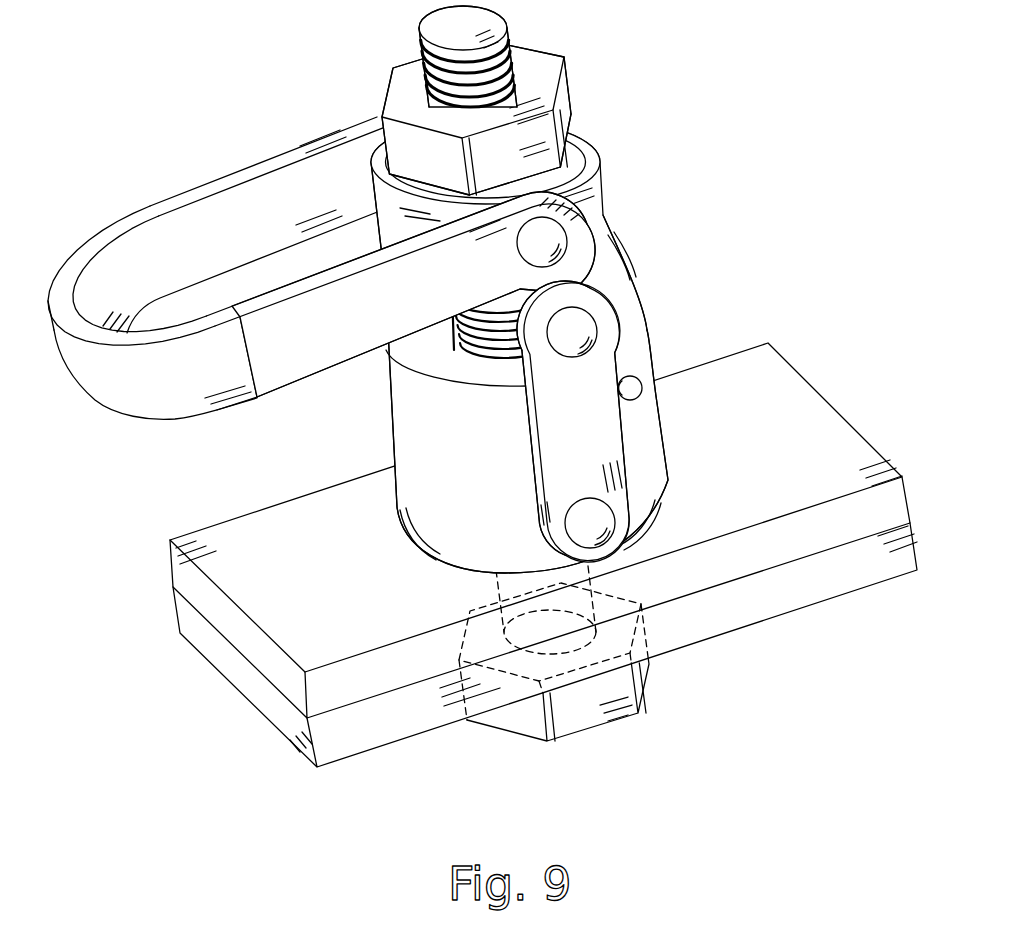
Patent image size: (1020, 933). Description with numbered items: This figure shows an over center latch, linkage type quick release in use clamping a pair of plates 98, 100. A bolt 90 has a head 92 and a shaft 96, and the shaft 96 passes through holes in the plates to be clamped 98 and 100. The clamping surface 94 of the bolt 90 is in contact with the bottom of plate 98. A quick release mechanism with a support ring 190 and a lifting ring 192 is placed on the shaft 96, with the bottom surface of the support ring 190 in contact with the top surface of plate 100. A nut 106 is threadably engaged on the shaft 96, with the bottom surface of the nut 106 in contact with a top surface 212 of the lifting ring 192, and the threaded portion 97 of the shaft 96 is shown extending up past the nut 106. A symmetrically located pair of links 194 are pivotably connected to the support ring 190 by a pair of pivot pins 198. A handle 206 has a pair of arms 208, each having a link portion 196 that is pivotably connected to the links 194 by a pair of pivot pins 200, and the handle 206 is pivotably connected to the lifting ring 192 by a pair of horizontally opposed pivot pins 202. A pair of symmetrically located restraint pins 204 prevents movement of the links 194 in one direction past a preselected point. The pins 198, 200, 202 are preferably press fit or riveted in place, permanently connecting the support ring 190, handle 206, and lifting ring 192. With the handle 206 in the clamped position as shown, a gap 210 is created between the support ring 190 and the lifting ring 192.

The bolt 90 is at (532, 748).
The head 92 is at (565, 728).
The clamping surface 94 is at (620, 638).
The shaft 96 is at (577, 572).
The threaded portion 97 is at (420, 48).
The plate 98 is at (397, 747).
The plate 100 is at (240, 508).
The nut 106 is at (570, 70).
The support ring 190 is at (377, 437).
The lifting ring 192 is at (600, 163).
The links 194 is at (555, 438).
The link portion 196 is at (572, 277).
The pivot pins 198 is at (580, 523).
The pivot pins 200 is at (590, 325).
The pivot pins 202 is at (556, 232).
The restraint pins 204 is at (645, 372).
The handle 206 is at (153, 422).
The arms 208 is at (193, 188).
The gap 210 is at (603, 250).
The top surface 212 is at (577, 113).